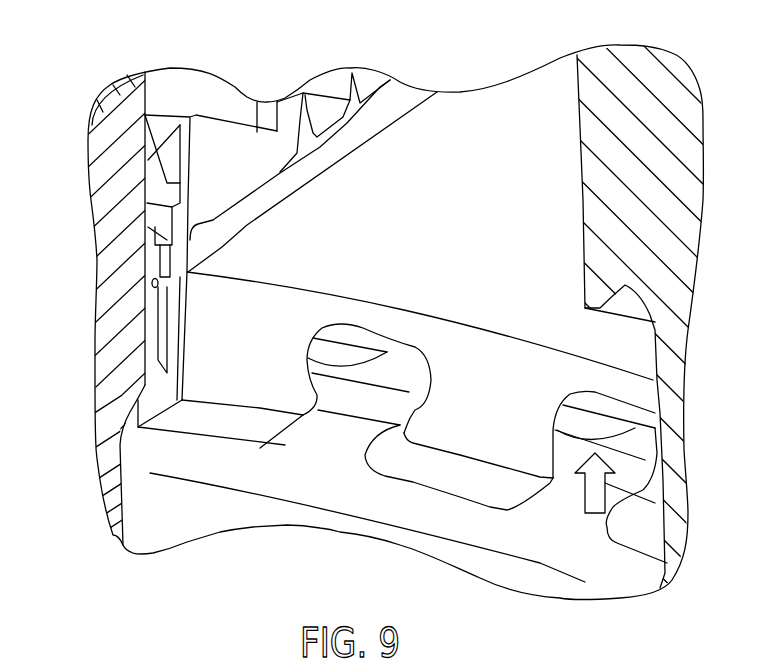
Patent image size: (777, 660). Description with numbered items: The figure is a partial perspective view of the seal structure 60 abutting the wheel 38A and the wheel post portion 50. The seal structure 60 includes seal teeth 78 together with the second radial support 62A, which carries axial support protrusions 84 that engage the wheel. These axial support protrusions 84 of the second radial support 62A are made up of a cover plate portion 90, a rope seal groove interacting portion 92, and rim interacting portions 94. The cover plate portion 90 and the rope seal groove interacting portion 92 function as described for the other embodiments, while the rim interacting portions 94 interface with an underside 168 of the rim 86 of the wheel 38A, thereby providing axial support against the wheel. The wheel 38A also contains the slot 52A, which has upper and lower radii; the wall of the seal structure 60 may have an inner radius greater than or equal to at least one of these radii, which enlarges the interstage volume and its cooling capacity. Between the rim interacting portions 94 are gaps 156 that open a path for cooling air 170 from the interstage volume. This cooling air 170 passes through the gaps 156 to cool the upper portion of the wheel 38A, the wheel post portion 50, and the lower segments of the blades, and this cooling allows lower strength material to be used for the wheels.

The wheel post portion 50 is at (107, 204).
The wheel 38A is at (107, 440).
The cover plate portion 90 is at (153, 145).
The second radial support 62A is at (205, 115).
The seal structure 60 is at (267, 177).
The seal teeth 78 is at (330, 90).
The axial support protrusions 84 is at (192, 242).
The rope seal groove interacting portion 92 is at (152, 312).
The rim 86 is at (155, 347).
The slot 52A is at (343, 357).
The rim interacting portions 94 is at (243, 380).
The underside 168 is at (340, 433).
The gaps 156 is at (376, 398).
The cooling air 170 is at (585, 492).